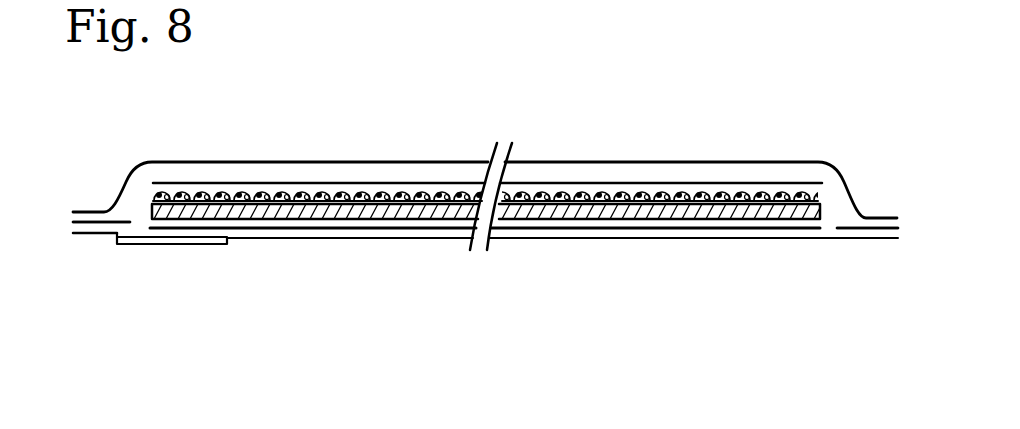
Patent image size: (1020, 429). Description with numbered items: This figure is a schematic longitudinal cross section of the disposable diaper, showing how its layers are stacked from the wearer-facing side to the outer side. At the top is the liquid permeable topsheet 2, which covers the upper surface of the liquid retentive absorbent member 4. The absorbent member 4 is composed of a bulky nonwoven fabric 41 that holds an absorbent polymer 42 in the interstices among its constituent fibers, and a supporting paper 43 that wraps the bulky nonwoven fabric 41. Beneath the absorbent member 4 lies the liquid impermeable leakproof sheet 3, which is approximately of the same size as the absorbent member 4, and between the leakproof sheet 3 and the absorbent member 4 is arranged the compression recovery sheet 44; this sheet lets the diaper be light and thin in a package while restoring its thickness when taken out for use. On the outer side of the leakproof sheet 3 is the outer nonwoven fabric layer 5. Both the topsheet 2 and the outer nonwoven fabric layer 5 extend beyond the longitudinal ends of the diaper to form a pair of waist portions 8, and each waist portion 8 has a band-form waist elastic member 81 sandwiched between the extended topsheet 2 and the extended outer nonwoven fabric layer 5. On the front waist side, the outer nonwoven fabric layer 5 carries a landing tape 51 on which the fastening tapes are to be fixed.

The topsheet 2 is at (108, 210).
The leakproof sheet 3 is at (370, 222).
The absorbent member 4 is at (487, 270).
The bulky nonwoven fabric 41 is at (565, 204).
The absorbent polymer 42 is at (612, 212).
The supporting paper 43 is at (658, 212).
The compression recovery sheet 44 is at (535, 297).
The outer nonwoven fabric layer 5 is at (307, 239).
The landing tape 51 is at (187, 245).
The waist portions 8 is at (493, 288).
The waist elastic member 81 is at (97, 223).